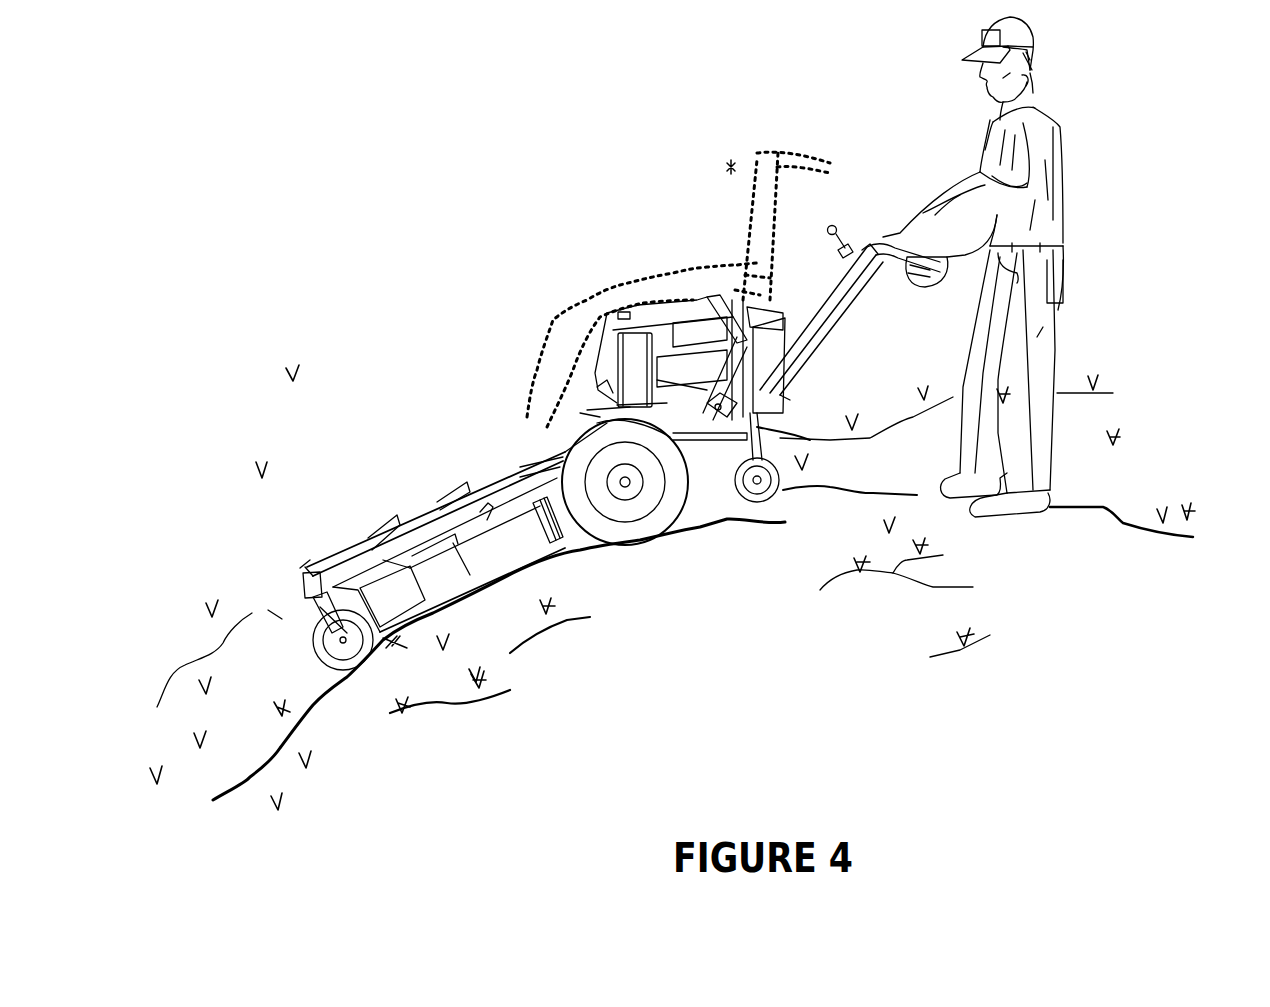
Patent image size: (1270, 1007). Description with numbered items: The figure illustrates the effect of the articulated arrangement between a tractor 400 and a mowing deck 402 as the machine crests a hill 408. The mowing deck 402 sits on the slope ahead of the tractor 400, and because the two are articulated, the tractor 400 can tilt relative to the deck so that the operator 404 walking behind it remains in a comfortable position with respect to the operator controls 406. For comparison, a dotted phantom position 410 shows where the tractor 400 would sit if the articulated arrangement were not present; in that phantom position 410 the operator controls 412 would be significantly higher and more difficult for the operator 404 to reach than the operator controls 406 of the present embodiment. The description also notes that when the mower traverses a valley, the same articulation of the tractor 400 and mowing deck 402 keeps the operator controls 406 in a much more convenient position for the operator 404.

The tractor 400 is at (735, 510).
The mowing deck 402 is at (430, 582).
The operator 404 is at (1067, 192).
The operator controls 406 is at (848, 228).
The hill 408 is at (580, 548).
The phantom position 410 is at (537, 357).
The operator controls 412 is at (737, 178).